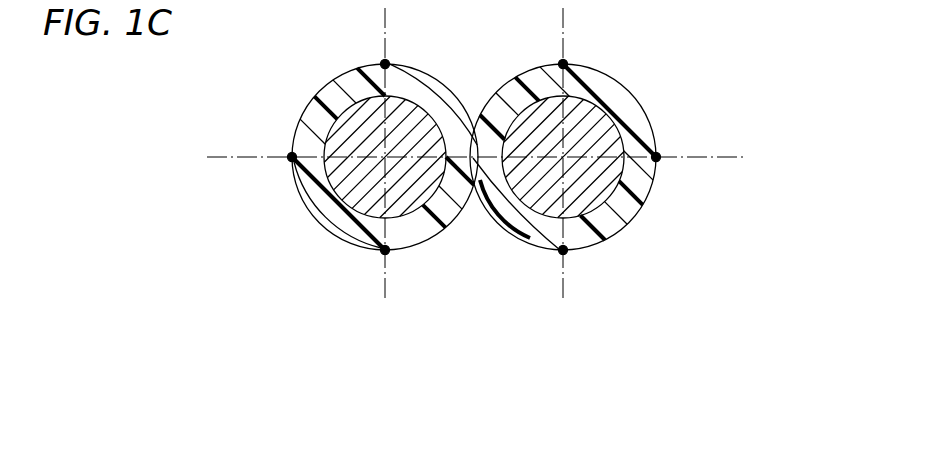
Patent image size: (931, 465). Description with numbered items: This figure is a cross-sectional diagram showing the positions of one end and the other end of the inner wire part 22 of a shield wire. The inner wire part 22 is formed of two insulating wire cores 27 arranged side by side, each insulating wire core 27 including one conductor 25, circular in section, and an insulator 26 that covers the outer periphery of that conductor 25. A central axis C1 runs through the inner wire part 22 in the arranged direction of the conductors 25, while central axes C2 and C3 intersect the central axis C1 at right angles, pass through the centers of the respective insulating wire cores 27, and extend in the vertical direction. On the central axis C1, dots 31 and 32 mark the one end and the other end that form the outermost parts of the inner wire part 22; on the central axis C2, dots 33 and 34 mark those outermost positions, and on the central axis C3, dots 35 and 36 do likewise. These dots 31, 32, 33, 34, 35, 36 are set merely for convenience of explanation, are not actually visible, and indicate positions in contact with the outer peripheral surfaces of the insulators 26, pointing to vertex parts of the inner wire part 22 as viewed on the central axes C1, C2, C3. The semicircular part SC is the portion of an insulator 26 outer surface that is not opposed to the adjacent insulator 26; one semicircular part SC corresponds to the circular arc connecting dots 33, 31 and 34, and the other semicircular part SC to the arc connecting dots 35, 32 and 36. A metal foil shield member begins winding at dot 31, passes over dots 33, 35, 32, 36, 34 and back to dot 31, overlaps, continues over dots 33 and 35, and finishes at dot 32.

The inner wire part 22 is at (474, 219).
The conductor 25 is at (400, 198).
The insulator 26 is at (425, 220).
The insulating wire core 27 is at (474, 201).
The dot 31 is at (290, 154).
The dot 32 is at (658, 154).
The dot 33 is at (383, 62).
The dot 34 is at (381, 253).
The dot 35 is at (566, 61).
The dot 36 is at (567, 253).
The central axis C1 is at (228, 153).
The central axis C2 is at (382, 286).
The central axis C3 is at (570, 286).
The semicircular part SC is at (303, 200).